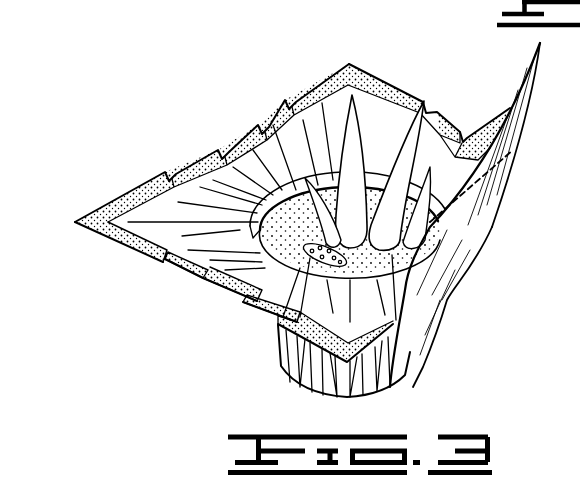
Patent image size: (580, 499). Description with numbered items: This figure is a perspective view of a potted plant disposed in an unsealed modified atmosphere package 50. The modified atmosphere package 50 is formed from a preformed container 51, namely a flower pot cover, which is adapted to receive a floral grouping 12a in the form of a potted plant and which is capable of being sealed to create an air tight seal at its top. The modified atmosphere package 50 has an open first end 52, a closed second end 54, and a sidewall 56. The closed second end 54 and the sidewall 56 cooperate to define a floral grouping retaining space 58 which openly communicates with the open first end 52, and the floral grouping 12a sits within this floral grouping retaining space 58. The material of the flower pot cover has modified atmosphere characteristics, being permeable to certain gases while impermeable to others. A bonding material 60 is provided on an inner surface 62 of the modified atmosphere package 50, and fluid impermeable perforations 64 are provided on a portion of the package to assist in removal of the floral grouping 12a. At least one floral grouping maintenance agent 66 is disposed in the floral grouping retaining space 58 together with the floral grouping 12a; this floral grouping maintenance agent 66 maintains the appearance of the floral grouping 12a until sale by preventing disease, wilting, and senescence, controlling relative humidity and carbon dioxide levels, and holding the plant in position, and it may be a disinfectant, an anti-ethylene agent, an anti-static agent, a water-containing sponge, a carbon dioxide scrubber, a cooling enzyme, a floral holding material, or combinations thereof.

The modified atmosphere package 50 is at (157, 70).
The preformed container 51 is at (268, 27).
The floral grouping 12a is at (405, 138).
The open first end 52 is at (400, 88).
The closed second end 54 is at (397, 388).
The sidewall 56 is at (433, 322).
The floral grouping retaining space 58 is at (253, 152).
The bonding material 60 is at (113, 202).
The inner surface 62 is at (170, 232).
The fluid impermeable perforations 64 is at (445, 210).
The floral grouping maintenance agent 66 is at (277, 312).